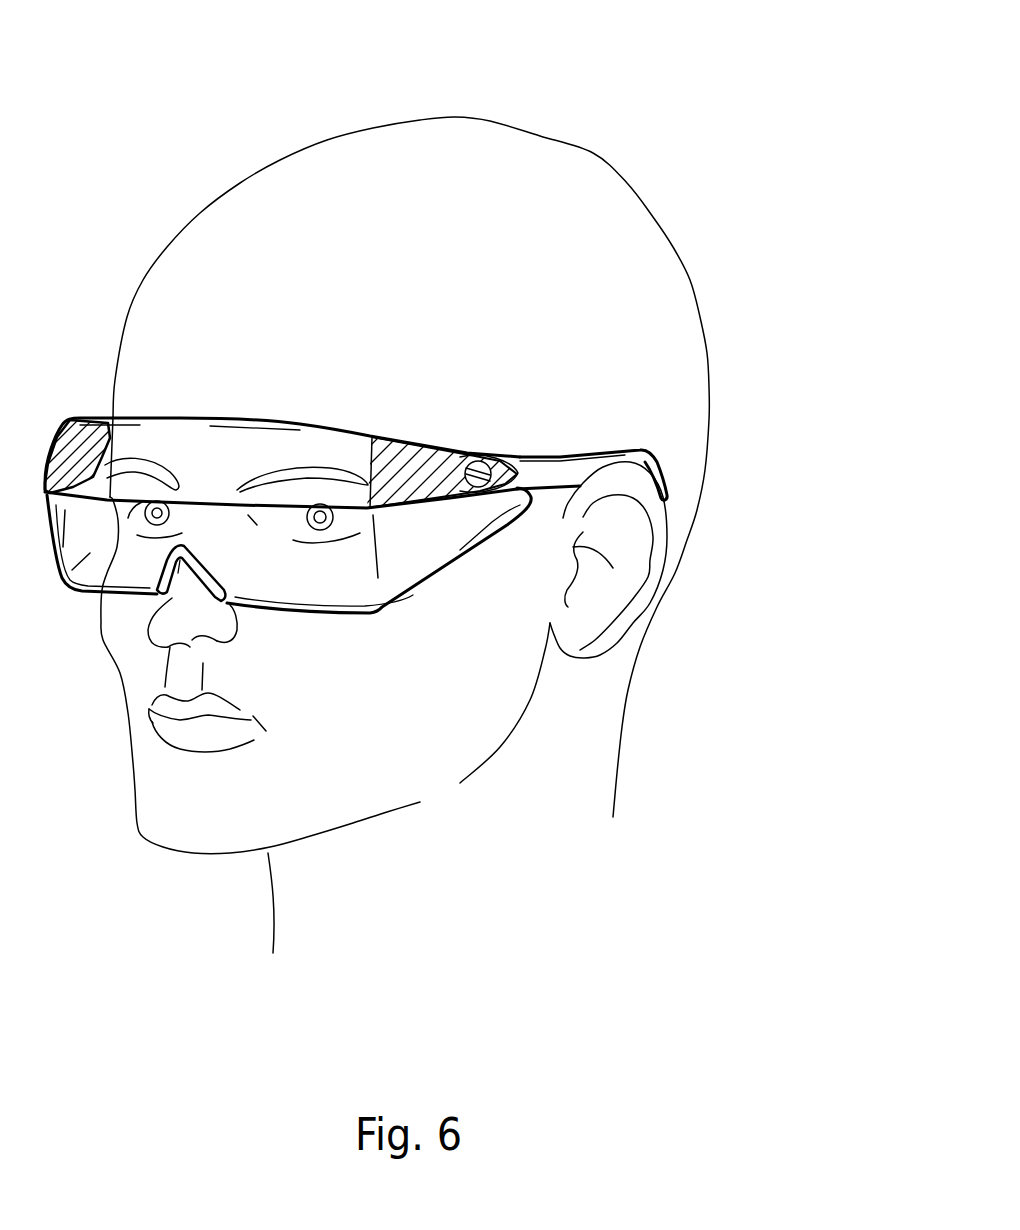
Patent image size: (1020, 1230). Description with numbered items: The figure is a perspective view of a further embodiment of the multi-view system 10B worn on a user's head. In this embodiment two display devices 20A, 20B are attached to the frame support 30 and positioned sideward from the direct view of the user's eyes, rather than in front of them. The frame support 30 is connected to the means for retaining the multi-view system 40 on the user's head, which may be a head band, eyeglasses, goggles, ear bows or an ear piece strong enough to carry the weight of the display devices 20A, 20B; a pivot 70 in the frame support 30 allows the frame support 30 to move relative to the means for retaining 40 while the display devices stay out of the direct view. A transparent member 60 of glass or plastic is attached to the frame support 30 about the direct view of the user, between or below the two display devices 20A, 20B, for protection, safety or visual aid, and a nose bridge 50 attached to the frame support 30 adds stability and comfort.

The multi-view system 10B is at (733, 147).
The frame support 30 is at (270, 423).
The display device 20B is at (86, 442).
The display device 20A is at (440, 488).
The pivot 70 is at (492, 475).
The means for retaining the multi-view system 40 is at (573, 455).
The nose bridge 50 is at (257, 613).
The transparent member 60 is at (420, 552).